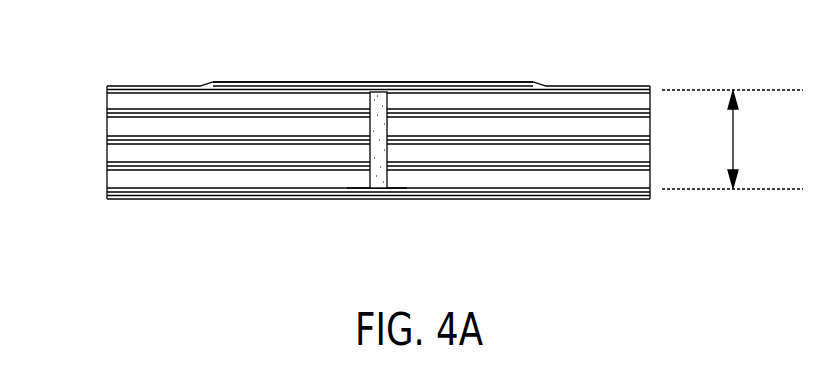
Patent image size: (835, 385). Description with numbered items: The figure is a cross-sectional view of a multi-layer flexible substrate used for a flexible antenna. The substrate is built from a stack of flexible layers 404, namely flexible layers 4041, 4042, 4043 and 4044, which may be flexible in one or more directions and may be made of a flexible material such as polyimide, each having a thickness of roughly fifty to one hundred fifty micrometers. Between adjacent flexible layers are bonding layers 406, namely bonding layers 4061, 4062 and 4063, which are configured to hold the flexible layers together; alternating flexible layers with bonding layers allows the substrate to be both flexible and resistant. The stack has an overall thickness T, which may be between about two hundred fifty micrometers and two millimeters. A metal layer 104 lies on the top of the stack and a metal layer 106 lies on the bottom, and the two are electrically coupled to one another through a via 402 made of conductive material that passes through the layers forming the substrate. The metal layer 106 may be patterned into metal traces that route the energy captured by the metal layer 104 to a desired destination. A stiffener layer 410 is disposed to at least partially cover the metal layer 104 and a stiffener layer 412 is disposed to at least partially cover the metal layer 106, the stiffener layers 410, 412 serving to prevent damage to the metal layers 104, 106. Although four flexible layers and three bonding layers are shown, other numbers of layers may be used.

The metal layer 104 is at (243, 83).
The metal layer 106 is at (247, 199).
The via 402 is at (382, 92).
The flexible layers 404 is at (341, 154).
The flexible layer 4041 is at (108, 101).
The flexible layer 4042 is at (108, 128).
The flexible layer 4043 is at (108, 155).
The flexible layer 4044 is at (108, 177).
The bonding layers 406 is at (341, 155).
The bonding layer 4061 is at (108, 113).
The bonding layer 4062 is at (108, 140).
The bonding layer 4063 is at (108, 167).
The stiffener layer 410 is at (522, 82).
The stiffener layer 412 is at (522, 199).
The thickness T is at (733, 140).